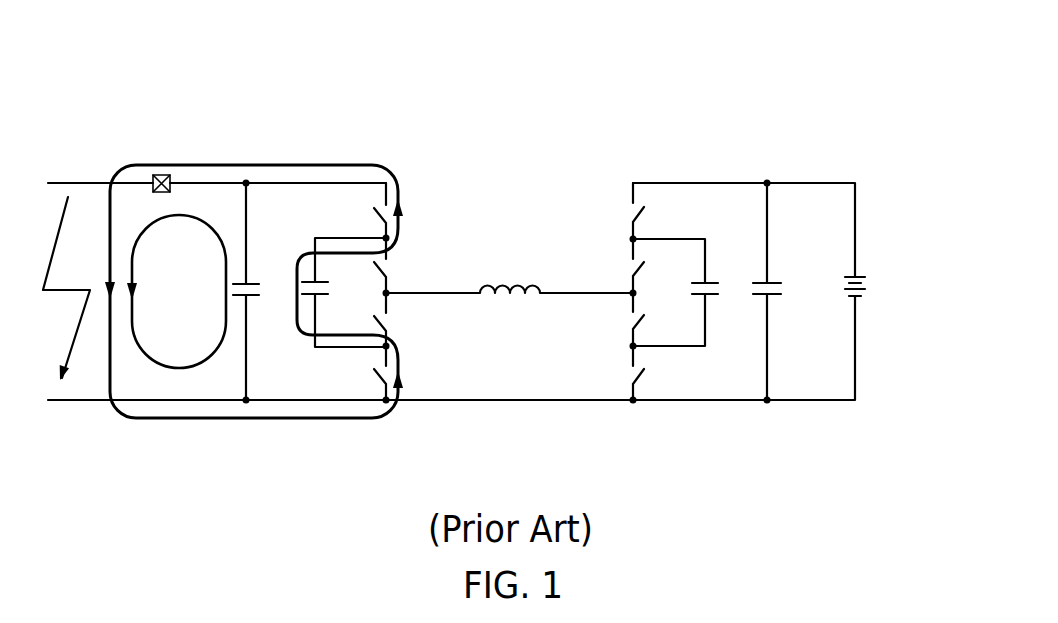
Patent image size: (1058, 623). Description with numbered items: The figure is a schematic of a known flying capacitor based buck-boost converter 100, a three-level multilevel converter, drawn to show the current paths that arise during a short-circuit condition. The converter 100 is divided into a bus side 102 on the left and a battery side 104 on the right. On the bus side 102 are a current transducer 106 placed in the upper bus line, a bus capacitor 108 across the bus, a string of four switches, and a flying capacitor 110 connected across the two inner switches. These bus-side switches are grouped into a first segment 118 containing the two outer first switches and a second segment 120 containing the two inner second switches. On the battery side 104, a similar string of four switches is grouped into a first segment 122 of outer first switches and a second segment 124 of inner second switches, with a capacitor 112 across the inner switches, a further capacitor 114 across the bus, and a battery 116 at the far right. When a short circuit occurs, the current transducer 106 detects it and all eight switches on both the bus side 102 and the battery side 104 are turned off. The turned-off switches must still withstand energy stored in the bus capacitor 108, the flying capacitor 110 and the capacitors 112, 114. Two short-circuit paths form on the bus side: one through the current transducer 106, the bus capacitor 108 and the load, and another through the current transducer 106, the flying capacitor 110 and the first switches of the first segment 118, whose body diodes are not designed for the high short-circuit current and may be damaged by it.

The flying capacitor based buck-boost converter 100 is at (148, 90).
The bus side 102 is at (103, 432).
The battery side 104 is at (796, 415).
The current transducer (CT) 106 is at (162, 175).
The bus capacitor 108 is at (232, 284).
The flying capacitor (FC) 110 is at (308, 298).
The capacitor 112 is at (714, 297).
The capacitor 114 is at (776, 284).
The battery 116 is at (860, 273).
The first segment 118 is at (345, 155).
The second segment 120 is at (307, 227).
The first segment 122 is at (690, 168).
The second segment 124 is at (718, 242).